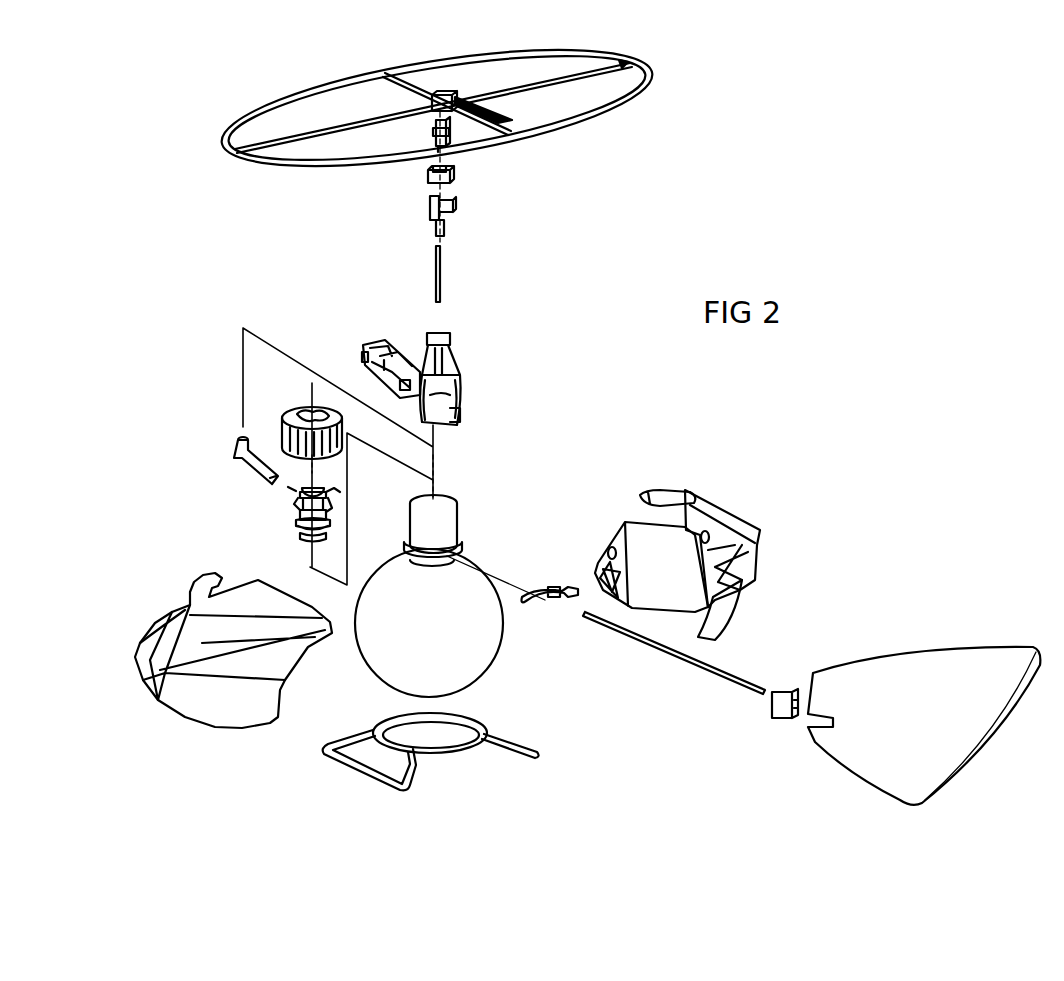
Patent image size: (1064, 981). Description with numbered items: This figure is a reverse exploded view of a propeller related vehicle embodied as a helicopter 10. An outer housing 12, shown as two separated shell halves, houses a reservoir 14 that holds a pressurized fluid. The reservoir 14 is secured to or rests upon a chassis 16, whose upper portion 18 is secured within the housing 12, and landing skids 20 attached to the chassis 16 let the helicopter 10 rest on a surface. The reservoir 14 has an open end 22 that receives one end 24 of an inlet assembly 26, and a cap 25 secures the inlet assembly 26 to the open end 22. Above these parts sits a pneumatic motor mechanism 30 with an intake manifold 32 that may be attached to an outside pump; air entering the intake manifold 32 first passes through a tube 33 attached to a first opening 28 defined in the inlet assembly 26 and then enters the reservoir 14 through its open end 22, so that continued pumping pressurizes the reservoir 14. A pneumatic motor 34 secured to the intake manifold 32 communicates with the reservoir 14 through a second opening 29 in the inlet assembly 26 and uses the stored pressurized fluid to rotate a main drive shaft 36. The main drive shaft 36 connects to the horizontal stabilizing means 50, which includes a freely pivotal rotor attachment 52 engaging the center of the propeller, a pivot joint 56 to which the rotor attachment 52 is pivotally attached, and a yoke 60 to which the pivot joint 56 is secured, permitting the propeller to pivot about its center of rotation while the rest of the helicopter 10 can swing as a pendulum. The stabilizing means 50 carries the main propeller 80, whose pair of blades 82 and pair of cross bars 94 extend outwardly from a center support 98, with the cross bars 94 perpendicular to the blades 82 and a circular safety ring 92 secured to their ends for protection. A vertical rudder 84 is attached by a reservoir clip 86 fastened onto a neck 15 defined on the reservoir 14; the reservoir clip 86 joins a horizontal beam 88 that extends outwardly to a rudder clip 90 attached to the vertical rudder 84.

The helicopter 10 is at (617, 338).
The outer housing 12 is at (188, 596).
The reservoir 14 is at (487, 650).
The neck 15 is at (466, 548).
The chassis 16 is at (446, 758).
The upper portion 18 is at (474, 727).
The landing skids 20 is at (363, 775).
The open end 22 is at (440, 500).
The end of inlet assembly 24 is at (302, 545).
The cap 25 is at (290, 413).
The inlet assembly 26 is at (270, 506).
The first opening 28 is at (300, 492).
The second opening 29 is at (340, 494).
The pneumatic motor mechanism 30 is at (418, 362).
The intake manifold 32 is at (361, 338).
The tube 33 is at (247, 462).
The pneumatic motor 34 is at (462, 388).
The main drive shaft 36 is at (441, 283).
The horizontal stabilizing means 50 is at (495, 189).
The rotor attachment 52 is at (437, 132).
The pivot joint 56 is at (428, 178).
The yoke 60 is at (432, 218).
The main propeller 80 is at (596, 124).
The blades 82 is at (300, 145).
The vertical rudder 84 is at (888, 660).
The reservoir clip 86 is at (552, 590).
The horizontal beam 88 is at (668, 655).
The rudder clip 90 is at (783, 692).
The circular safety ring 92 is at (498, 142).
The cross bars 94 is at (438, 95).
The center support 98 is at (456, 86).